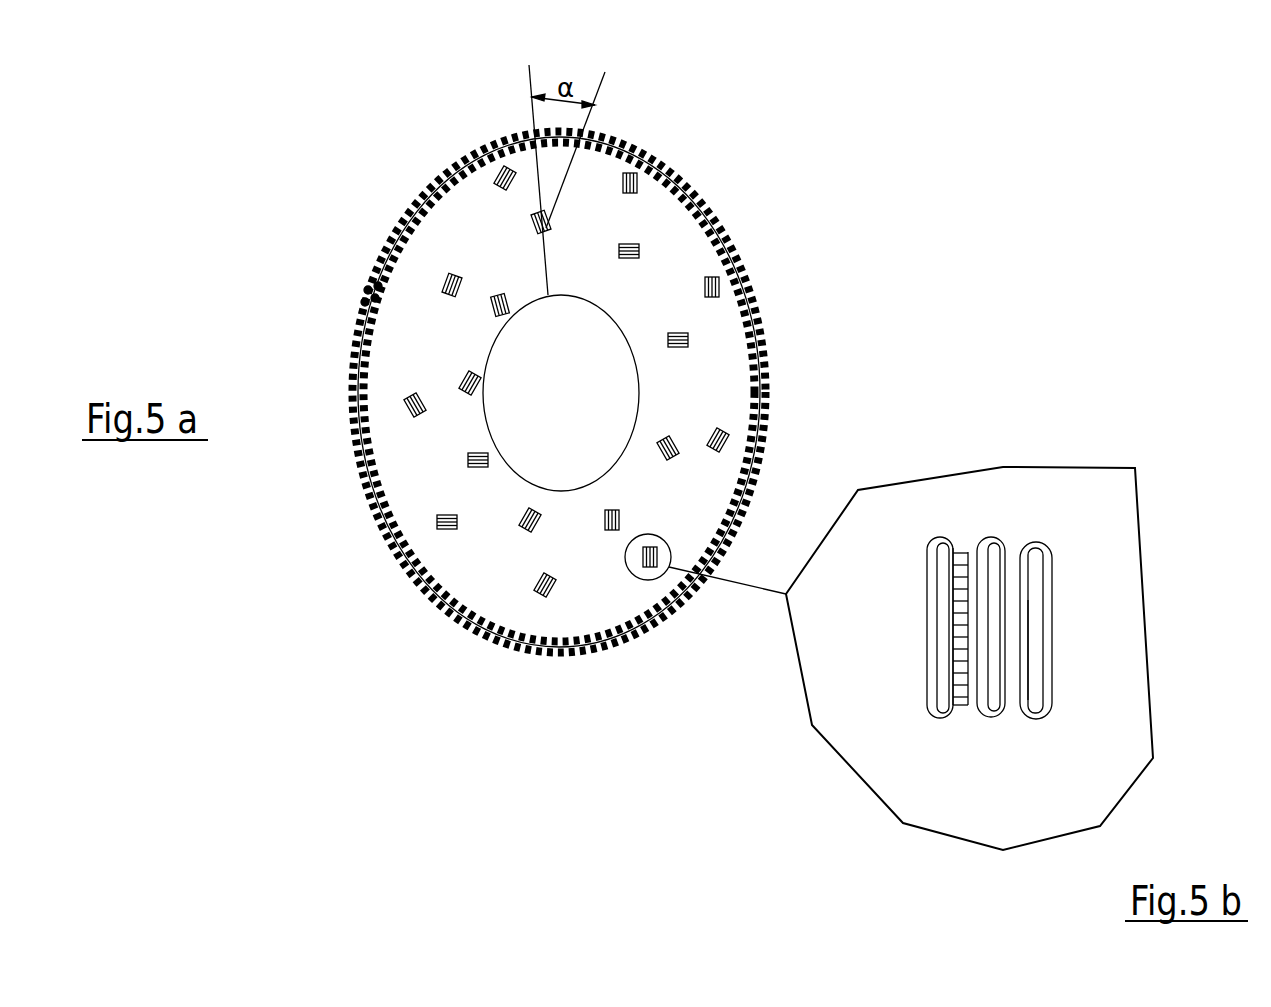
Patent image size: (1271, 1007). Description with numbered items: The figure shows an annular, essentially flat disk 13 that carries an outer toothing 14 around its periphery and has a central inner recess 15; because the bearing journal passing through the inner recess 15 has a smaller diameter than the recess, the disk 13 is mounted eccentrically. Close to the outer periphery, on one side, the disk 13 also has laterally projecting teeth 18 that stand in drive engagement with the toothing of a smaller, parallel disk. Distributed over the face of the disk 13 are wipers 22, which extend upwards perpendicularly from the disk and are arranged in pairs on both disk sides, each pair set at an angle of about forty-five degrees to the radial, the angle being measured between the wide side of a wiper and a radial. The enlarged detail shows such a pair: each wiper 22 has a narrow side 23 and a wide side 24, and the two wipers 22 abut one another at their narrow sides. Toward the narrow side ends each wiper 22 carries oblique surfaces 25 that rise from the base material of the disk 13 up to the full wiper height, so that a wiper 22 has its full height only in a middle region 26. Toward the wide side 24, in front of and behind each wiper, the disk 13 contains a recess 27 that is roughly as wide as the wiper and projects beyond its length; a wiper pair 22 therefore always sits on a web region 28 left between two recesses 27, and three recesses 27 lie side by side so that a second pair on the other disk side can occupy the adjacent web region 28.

In FIG. 5a, the disk 13 is at (681, 295).
In FIG. 5a, the outer toothing 14 is at (695, 174).
In FIG. 5a, the inner recess 15 is at (508, 467).
In FIG. 5a, the teeth 18 is at (379, 297).
In FIG. 5b, the wipers 22 is at (963, 727).
In FIG. 5b, the narrow side 23 is at (962, 562).
In FIG. 5b, the wide side 24 is at (1027, 565).
In FIG. 5b, the oblique surfaces 25 is at (940, 560).
In FIG. 5b, the middle region 26 is at (965, 587).
In FIG. 5b, the recess 27 is at (1040, 668).
In FIG. 5b, the web region 28 is at (1007, 620).